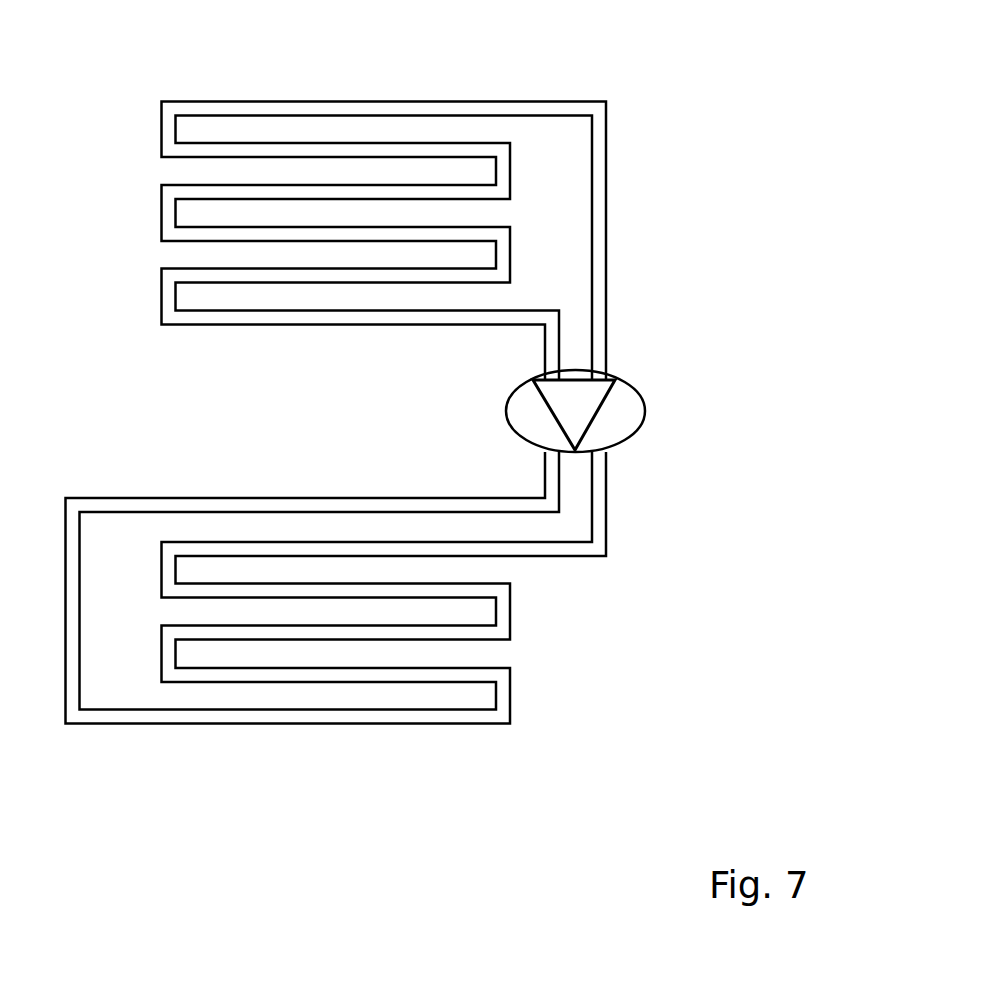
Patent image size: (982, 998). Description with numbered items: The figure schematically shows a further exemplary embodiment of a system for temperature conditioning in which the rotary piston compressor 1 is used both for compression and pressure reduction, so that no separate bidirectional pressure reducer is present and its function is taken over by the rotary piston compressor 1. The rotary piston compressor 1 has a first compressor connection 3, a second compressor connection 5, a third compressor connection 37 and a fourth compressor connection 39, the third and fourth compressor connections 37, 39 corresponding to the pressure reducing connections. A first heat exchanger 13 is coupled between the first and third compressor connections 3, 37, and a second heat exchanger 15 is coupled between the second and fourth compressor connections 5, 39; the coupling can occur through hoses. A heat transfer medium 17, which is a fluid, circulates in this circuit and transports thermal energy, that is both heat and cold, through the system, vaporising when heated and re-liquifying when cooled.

The rotary piston compressor 1 is at (645, 398).
The first compressor connection 3 is at (608, 372).
The second compressor connection 5 is at (607, 450).
The first heat exchanger 13 is at (363, 142).
The second heat exchanger 15 is at (510, 610).
The heat transfer medium 17 is at (606, 192).
The third compressor connection 37 is at (545, 375).
The fourth compressor connection 39 is at (545, 448).